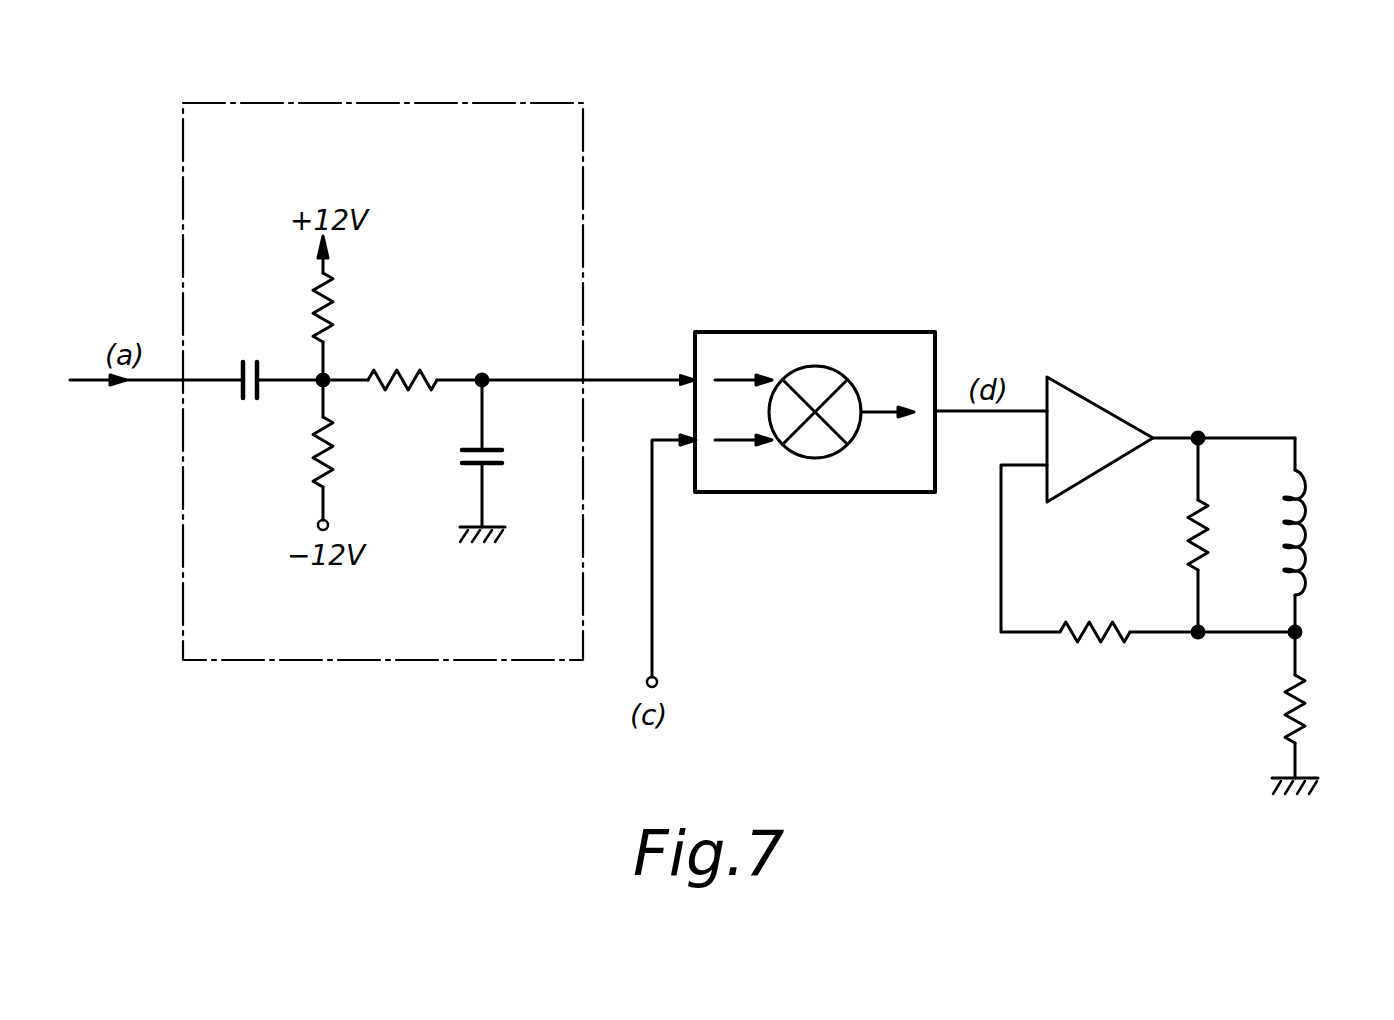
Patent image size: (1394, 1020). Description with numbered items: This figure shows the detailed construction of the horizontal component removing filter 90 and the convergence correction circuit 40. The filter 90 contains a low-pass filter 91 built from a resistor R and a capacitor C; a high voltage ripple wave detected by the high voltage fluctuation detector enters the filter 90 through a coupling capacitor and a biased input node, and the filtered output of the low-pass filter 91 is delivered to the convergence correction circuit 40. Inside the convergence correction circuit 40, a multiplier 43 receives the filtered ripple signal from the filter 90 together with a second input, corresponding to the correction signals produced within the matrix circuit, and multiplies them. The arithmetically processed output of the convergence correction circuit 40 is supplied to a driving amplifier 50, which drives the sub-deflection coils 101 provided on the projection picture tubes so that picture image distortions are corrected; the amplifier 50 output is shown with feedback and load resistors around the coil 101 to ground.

The horizontal component removing filter 90 is at (512, 103).
The low-pass filter 91 is at (531, 424).
The convergence correction circuit 40 is at (898, 332).
The multiplier 43 is at (812, 366).
The driving amplifier 50 is at (1100, 406).
The sub-deflection coils 101 is at (1312, 526).